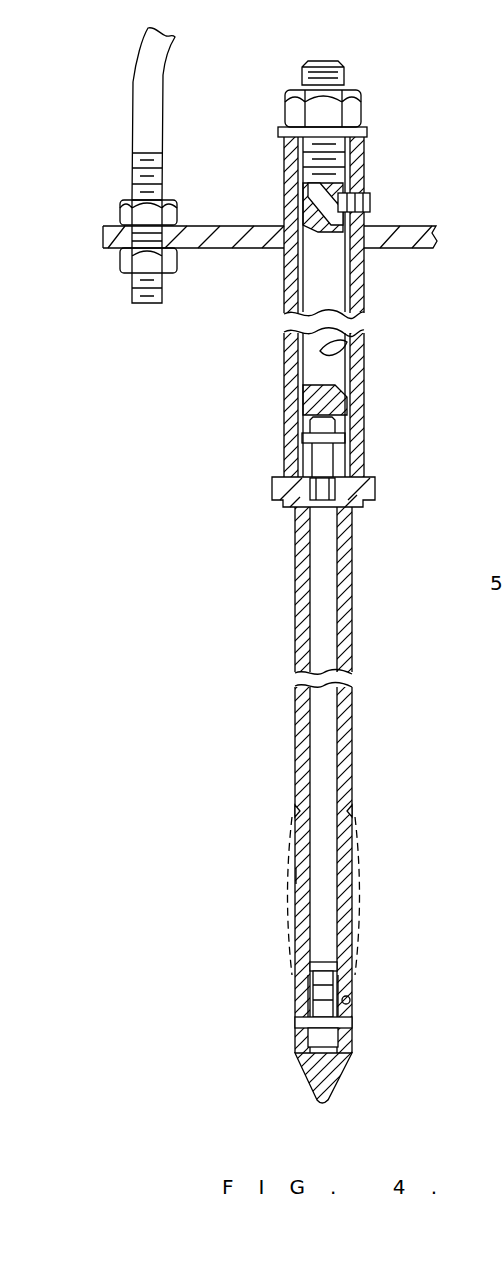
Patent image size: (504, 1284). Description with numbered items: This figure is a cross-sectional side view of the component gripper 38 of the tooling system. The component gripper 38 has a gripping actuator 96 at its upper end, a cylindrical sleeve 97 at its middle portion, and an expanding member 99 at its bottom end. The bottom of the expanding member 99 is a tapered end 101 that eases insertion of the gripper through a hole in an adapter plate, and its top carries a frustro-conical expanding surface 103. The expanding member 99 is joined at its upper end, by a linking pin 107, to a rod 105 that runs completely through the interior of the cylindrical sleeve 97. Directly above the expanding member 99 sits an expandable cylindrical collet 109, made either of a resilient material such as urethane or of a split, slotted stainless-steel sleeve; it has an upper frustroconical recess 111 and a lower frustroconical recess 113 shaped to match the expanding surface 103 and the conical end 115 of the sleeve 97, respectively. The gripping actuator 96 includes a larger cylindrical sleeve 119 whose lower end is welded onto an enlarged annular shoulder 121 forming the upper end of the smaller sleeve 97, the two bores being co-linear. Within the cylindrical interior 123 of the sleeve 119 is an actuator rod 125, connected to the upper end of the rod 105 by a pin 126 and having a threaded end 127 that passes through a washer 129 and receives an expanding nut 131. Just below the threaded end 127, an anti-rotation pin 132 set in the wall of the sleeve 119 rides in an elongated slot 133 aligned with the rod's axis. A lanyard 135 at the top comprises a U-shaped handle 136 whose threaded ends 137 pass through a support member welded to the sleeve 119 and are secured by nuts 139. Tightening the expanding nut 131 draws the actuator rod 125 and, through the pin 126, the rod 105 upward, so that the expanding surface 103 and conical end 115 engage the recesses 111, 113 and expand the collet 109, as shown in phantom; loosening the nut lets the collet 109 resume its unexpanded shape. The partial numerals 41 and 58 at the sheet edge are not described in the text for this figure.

The component gripper 38 is at (245, 608).
The gripping actuator 96 is at (278, 298).
The cylindrical sleeve 97 is at (302, 703).
The expanding member 99 is at (280, 1043).
The tapered end 101 is at (306, 1074).
The frustro-conical expanding surface 103 is at (350, 1003).
The rod 105 is at (327, 912).
The linking pin 107 is at (306, 1022).
The expandable cylindrical collet 109 is at (298, 875).
The upper frustroconical recess 111 is at (306, 985).
The lower frustroconical recess 113 is at (355, 797).
The conical end 115 is at (294, 828).
The cylindrical sleeve 119 is at (356, 298).
The annular shoulder 121 is at (283, 491).
The cylindrical interior 123 is at (330, 362).
The actuator rod 125 is at (308, 353).
The pin 126 is at (364, 408).
The threaded end 127 is at (344, 64).
The washer 129 is at (370, 132).
The expanding nut 131 is at (352, 100).
The anti-rotation pin 132 is at (371, 200).
The elongated slot 133 is at (232, 238).
The lanyard 135 is at (147, 80).
The U-shaped handle 136 is at (160, 50).
The threaded ends 137 is at (147, 303).
The nuts 139 is at (126, 200).
The partial numeral (adjacent figure) 41 is at (487, 516).
The partial numeral (adjacent figure) 58 is at (489, 648).